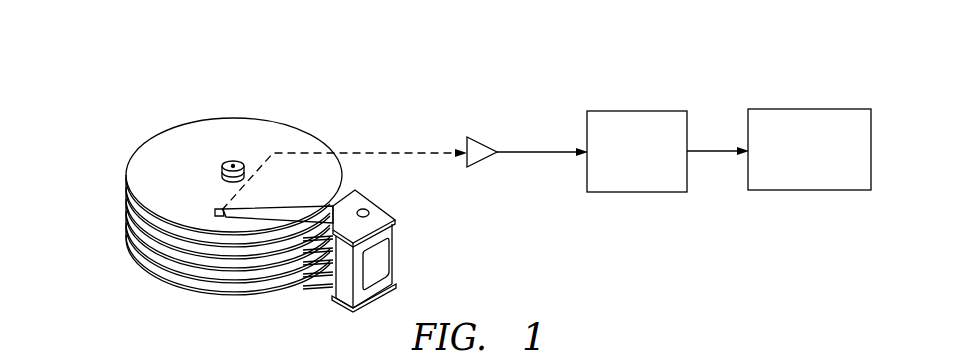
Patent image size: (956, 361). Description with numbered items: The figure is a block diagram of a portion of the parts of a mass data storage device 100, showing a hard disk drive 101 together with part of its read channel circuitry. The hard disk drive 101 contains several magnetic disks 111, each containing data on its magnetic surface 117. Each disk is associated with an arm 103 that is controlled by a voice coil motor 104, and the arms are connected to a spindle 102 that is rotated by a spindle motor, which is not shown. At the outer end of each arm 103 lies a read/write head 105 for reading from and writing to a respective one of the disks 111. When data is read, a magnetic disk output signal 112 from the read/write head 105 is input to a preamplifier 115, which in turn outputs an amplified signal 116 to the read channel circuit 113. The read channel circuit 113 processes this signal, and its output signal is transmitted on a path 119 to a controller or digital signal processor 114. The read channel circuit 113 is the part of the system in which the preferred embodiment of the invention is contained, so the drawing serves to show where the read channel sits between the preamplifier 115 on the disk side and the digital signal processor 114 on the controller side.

The mass data storage device 100 is at (358, 56).
The hard disk drive 101 is at (114, 166).
The magnetic disks 111 is at (158, 148).
The magnetic surface 117 is at (163, 183).
The read/write head 105 is at (216, 213).
The arm 103 is at (281, 211).
The spindle 102 is at (367, 210).
The voice coil motor 104 is at (395, 250).
The magnetic disk output signal 112 is at (392, 151).
The preamplifier 115 is at (483, 165).
The amplified signal 116 is at (546, 151).
The read channel circuit 113 is at (638, 111).
The path 119 is at (710, 152).
The digital signal processor 114 is at (812, 109).